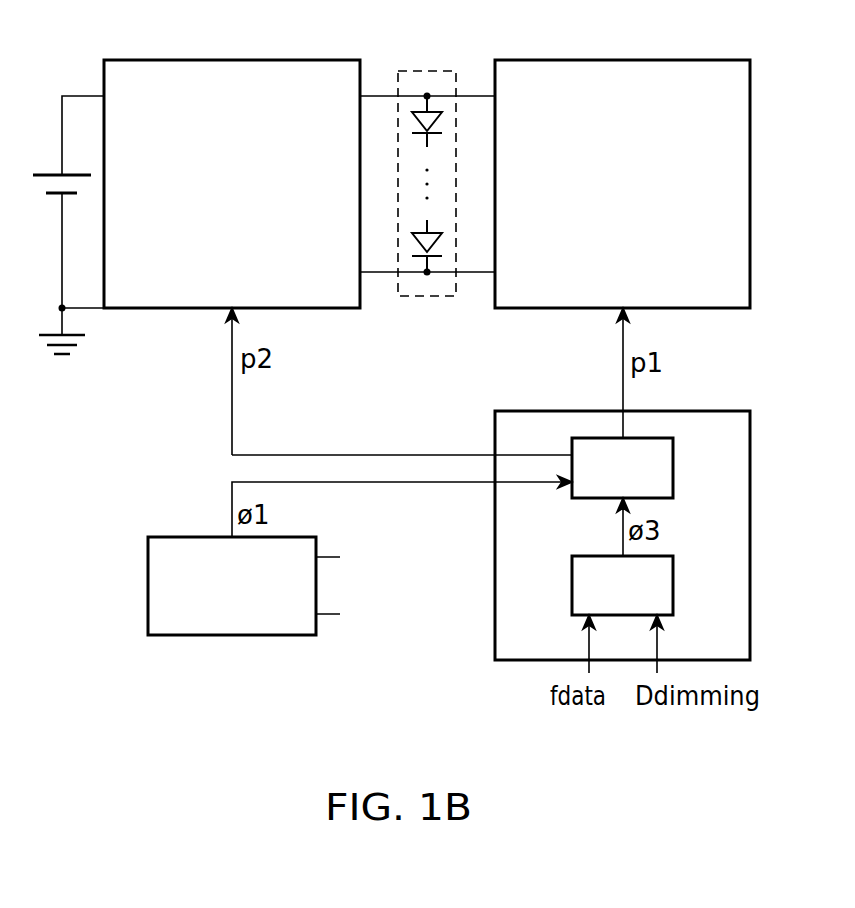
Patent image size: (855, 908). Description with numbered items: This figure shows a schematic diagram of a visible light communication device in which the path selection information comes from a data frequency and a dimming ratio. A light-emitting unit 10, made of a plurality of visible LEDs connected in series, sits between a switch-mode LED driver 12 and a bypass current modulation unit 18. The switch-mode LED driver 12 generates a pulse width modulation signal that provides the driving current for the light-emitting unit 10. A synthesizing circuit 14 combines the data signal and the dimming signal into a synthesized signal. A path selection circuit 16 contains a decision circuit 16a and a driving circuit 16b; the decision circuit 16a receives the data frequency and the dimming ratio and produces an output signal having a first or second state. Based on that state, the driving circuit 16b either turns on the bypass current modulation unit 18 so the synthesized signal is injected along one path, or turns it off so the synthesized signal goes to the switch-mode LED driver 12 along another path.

The light-emitting unit 10 is at (424, 68).
The switch-mode light-emitting diode (LED) driver 12 is at (104, 62).
The synthesizing circuit 14 is at (150, 537).
The path selection circuit 16 is at (495, 413).
The decision circuit 16a is at (675, 587).
The driving circuit 16b is at (675, 467).
The bypass current modulation unit 18 is at (495, 62).